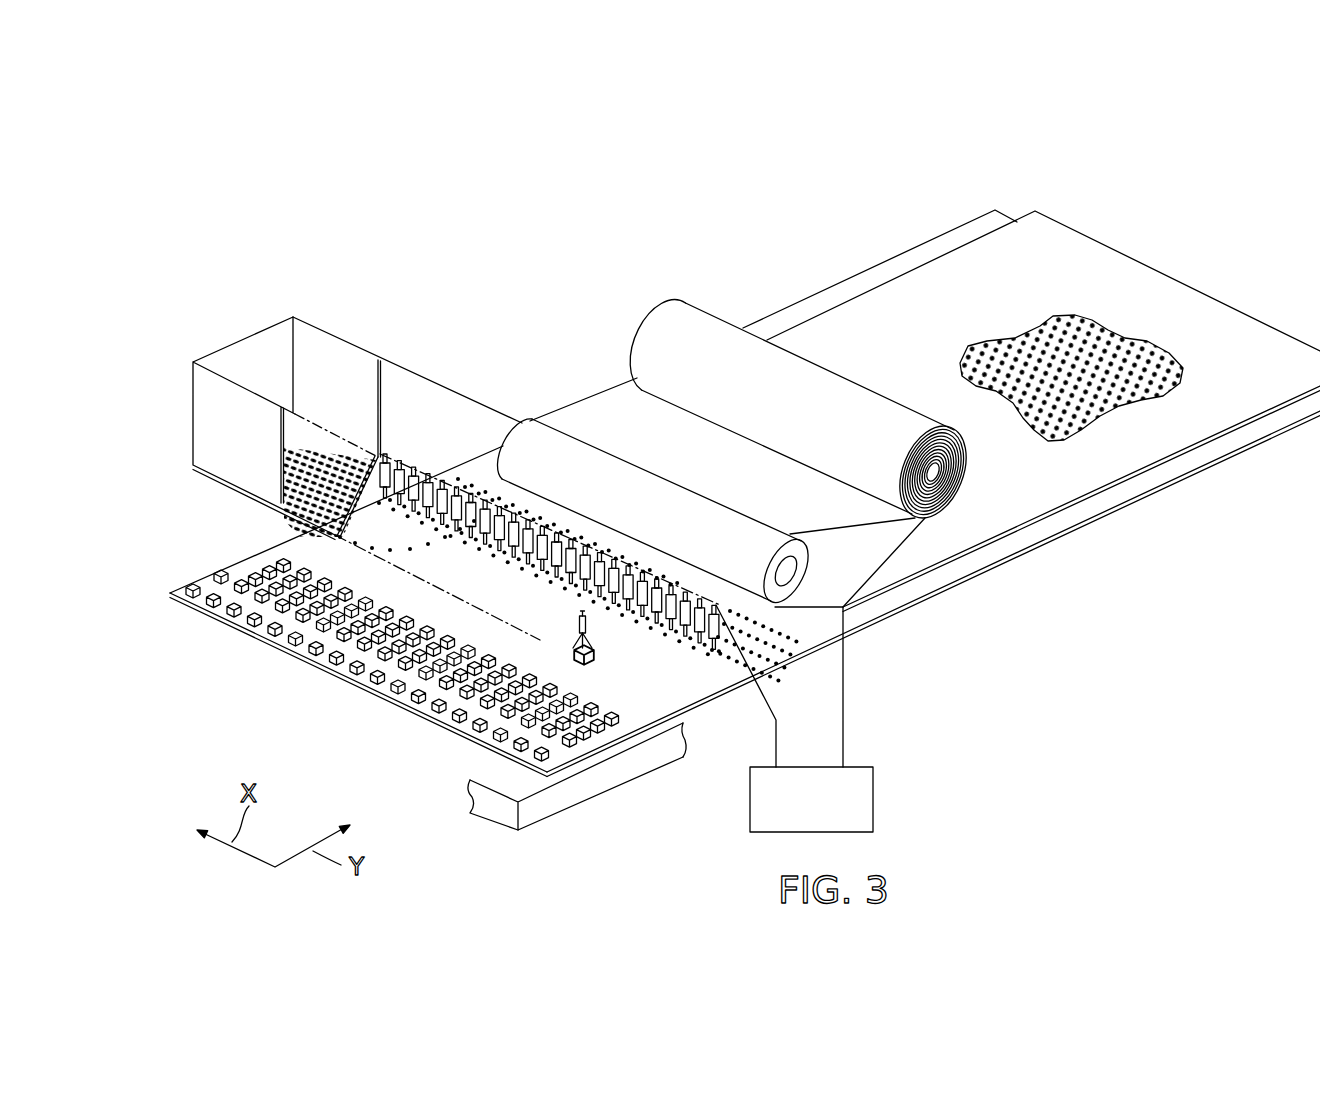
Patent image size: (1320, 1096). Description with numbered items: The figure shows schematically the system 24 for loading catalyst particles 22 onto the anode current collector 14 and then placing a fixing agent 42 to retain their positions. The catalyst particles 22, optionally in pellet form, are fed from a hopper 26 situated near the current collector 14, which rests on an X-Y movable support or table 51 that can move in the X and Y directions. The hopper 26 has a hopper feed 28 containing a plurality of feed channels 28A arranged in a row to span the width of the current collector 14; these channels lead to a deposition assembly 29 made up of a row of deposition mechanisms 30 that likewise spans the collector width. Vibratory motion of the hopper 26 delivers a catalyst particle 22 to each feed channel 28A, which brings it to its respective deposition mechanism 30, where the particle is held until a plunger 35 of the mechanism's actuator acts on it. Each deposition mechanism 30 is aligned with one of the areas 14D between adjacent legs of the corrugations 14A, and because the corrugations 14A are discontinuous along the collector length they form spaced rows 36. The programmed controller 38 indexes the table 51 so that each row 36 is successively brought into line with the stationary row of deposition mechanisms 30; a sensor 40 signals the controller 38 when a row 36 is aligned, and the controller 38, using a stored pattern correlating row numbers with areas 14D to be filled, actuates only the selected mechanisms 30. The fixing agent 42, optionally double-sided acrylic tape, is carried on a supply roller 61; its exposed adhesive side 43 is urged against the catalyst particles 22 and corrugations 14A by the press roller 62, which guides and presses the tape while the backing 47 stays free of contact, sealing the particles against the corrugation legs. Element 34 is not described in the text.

The system 24 is at (396, 175).
The hopper 26 is at (313, 340).
The hopper feed 28 is at (300, 532).
The feed channels 28A is at (414, 551).
The deposition assembly 29 is at (388, 457).
The deposition mechanisms 30 is at (413, 463).
The catalyst particles 22 is at (450, 478).
The plunger 35 is at (733, 662).
The sensor 40 is at (578, 622).
The rows 36 is at (564, 650).
The anode current collector 14 is at (1052, 541).
The corrugations 14A is at (420, 707).
The areas between adjacent legs of the corrugations 14D is at (478, 743).
The web edge 34 is at (1101, 492).
The backing 47 is at (1003, 292).
The fixing agent 42 is at (738, 473).
The supply roller 61 is at (946, 483).
The press roller 62 is at (808, 581).
The exposed adhesive side 43 is at (824, 590).
The X-Y movable support or table 51 is at (588, 766).
The programmed controller 38 is at (874, 798).